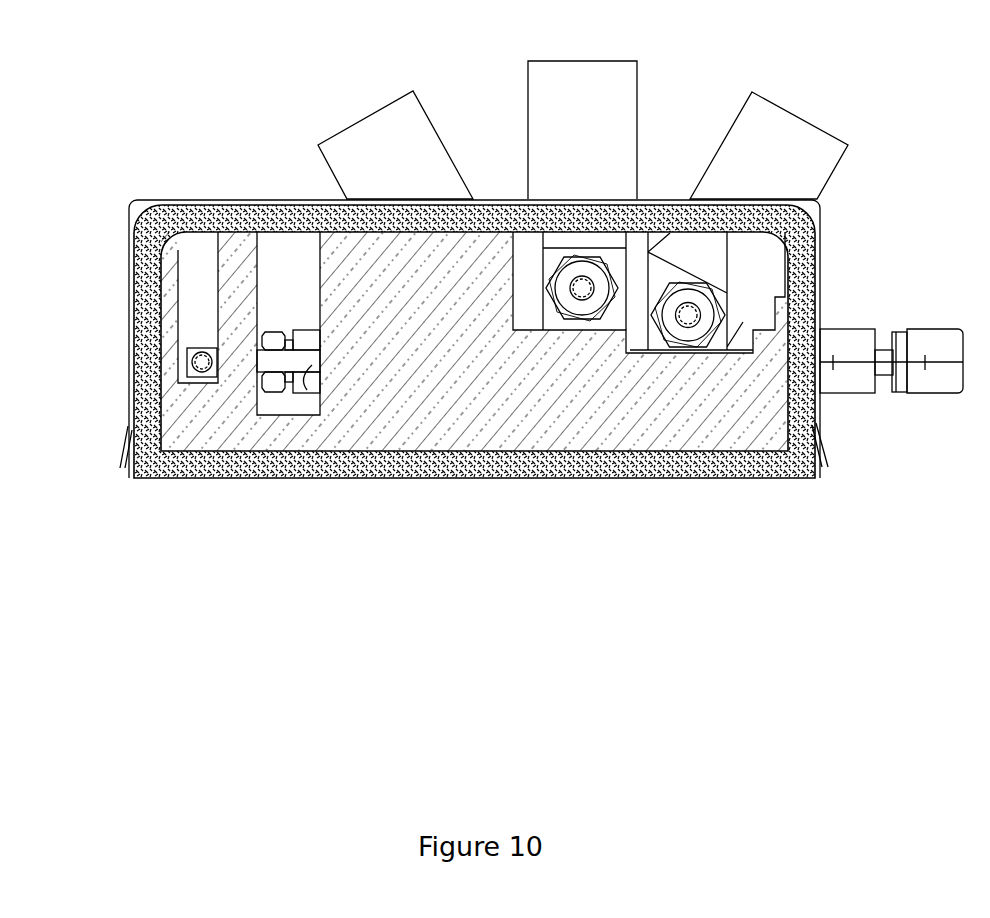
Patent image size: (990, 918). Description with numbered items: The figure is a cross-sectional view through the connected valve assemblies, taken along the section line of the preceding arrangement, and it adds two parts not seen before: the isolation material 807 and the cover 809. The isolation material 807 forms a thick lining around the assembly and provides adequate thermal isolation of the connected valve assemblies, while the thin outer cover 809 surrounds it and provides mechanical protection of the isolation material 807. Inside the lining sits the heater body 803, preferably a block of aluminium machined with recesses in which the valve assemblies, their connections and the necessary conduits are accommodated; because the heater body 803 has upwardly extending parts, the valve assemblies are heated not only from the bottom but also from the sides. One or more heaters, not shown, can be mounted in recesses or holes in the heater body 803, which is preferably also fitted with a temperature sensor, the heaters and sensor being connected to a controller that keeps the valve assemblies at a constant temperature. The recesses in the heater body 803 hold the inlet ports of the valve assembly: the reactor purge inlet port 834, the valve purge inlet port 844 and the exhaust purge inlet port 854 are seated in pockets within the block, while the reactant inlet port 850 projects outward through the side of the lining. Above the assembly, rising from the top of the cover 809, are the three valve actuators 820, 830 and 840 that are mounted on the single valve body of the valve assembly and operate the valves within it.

The heater body 803 is at (448, 418).
The isolation material 807 is at (147, 328).
The cover 809 is at (127, 218).
The valve actuator 820 is at (330, 172).
The valve actuator 830 is at (637, 75).
The valve actuator 840 is at (818, 127).
The reactor purge inlet port 834 is at (588, 318).
The valve purge inlet port 844 is at (312, 332).
The reactant inlet port 850 is at (848, 395).
The exhaust purge inlet port 854 is at (677, 343).